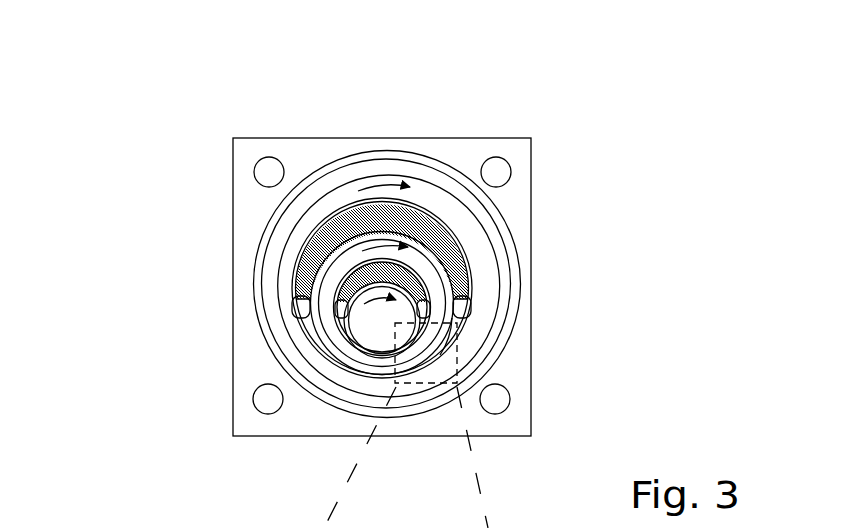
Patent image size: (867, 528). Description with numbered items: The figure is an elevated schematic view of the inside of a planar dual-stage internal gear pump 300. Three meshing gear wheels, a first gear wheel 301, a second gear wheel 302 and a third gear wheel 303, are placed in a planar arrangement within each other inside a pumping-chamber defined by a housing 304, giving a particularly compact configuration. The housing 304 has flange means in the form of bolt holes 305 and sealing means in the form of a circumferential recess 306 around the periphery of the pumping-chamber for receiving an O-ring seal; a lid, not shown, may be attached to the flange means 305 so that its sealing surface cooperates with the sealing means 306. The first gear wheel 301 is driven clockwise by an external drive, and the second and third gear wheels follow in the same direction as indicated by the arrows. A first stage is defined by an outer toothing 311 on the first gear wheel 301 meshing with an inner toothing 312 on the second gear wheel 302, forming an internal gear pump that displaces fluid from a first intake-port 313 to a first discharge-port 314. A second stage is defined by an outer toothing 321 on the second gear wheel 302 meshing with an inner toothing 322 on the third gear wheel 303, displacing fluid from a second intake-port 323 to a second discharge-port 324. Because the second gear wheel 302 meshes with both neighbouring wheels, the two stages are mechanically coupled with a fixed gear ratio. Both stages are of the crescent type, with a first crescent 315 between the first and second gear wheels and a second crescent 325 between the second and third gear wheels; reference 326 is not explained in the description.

The dual-stage gear pump 300 is at (123, 96).
The first gear wheel 301 is at (380, 318).
The second gear wheel 302 is at (375, 376).
The third gear wheel 303 is at (372, 392).
The housing 304 is at (318, 152).
The bolt holes 305 is at (269, 172).
The circumferential recess 306 is at (435, 165).
The outer toothing 311 is at (330, 337).
The inner toothing 312 is at (340, 330).
The first intake-port 313 is at (338, 306).
The first discharge-port 314 is at (428, 304).
The first crescent 315 is at (412, 272).
The outer toothing 321 is at (457, 343).
The inner toothing 322 is at (455, 335).
The second intake-port 323 is at (305, 316).
The second discharge-port 324 is at (462, 310).
The second crescent 325 is at (318, 227).
The outer ring 326 is at (472, 215).